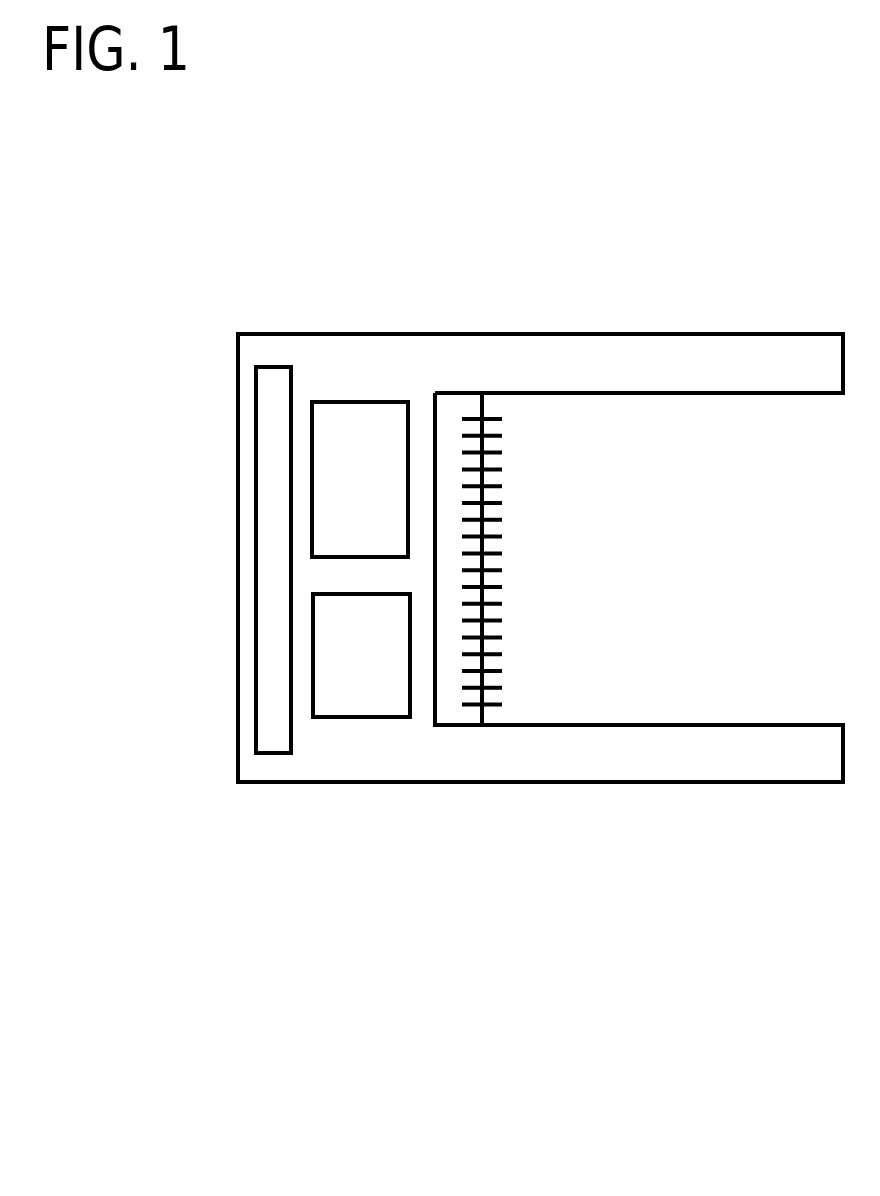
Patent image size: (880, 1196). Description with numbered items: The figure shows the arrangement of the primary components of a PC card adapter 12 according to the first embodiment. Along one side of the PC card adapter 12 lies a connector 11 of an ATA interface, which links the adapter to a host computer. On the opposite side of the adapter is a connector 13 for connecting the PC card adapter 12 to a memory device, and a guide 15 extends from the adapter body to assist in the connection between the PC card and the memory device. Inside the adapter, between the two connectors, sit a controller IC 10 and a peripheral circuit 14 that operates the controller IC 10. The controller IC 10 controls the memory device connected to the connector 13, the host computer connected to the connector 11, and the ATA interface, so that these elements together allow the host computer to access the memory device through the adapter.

The controller IC 10 is at (339, 521).
The connector 11 is at (270, 387).
The PC card adapter 12 is at (487, 350).
The connector 13 is at (451, 423).
The peripheral circuit 14 is at (335, 655).
The guide 15 is at (689, 373).